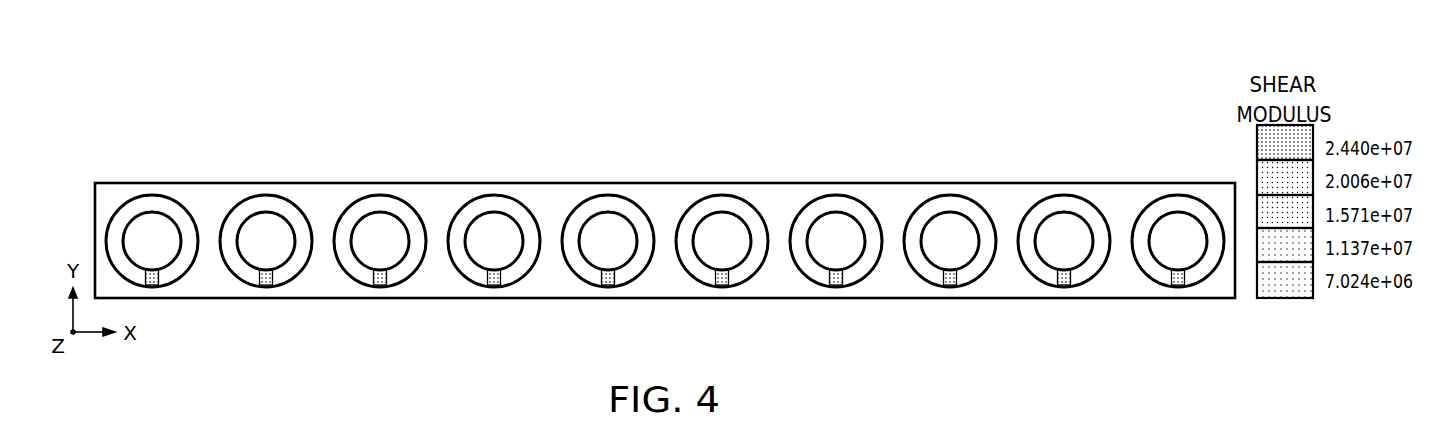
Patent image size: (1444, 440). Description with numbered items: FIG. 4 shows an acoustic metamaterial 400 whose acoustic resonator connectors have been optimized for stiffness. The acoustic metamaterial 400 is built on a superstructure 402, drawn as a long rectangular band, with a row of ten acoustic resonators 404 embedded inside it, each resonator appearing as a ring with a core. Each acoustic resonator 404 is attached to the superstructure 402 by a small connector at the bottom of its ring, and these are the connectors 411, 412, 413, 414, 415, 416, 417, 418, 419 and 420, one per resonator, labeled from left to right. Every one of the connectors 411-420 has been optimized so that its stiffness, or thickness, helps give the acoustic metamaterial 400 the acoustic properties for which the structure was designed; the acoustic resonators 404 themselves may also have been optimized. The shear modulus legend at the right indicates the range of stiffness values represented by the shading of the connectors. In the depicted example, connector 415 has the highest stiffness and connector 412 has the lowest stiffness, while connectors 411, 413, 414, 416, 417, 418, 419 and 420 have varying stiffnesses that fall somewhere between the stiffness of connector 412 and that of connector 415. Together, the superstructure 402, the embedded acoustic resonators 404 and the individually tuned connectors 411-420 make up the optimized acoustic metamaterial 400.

The acoustic metamaterial 400 is at (340, 94).
The superstructure 402 is at (665, 183).
The acoustic resonators 404 is at (151, 220).
The connector 411 is at (160, 281).
The connector 412 is at (259, 281).
The connector 413 is at (373, 281).
The connector 414 is at (487, 281).
The connector 415 is at (601, 281).
The connector 416 is at (730, 281).
The connector 417 is at (844, 281).
The connector 418 is at (958, 281).
The connector 419 is at (1072, 281).
The connector 420 is at (1186, 281).